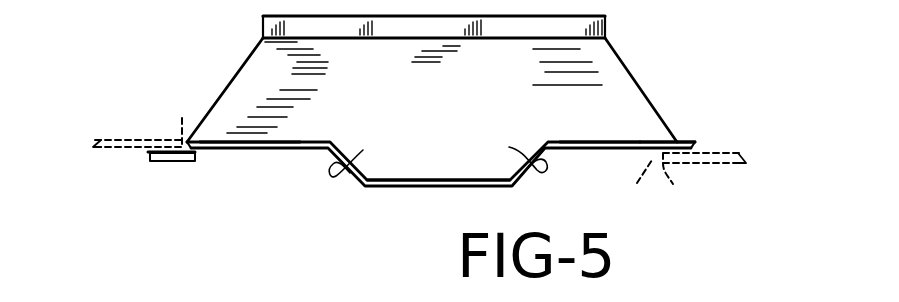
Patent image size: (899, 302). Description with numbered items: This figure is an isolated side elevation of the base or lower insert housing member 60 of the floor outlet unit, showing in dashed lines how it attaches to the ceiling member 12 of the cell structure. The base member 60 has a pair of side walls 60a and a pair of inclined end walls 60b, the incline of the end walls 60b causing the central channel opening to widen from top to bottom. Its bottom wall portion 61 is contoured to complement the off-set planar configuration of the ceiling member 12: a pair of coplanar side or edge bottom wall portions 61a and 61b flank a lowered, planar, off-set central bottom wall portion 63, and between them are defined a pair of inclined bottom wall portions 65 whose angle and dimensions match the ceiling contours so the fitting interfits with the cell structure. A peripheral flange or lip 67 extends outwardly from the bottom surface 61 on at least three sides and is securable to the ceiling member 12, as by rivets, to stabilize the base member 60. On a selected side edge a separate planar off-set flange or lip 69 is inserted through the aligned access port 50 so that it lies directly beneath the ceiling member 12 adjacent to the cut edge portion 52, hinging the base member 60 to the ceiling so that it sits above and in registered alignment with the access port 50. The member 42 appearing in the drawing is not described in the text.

The base insert housing member 60 is at (667, 108).
The side wall 60a is at (474, 103).
The inclined end wall 60b is at (255, 50).
The bottom wall portion 61 is at (276, 150).
The side bottom wall portion 61a is at (246, 150).
The side bottom wall portion 61b is at (585, 150).
The central bottom wall portion 63 is at (407, 188).
The inclined bottom wall portion 65 is at (438, 152).
The peripheral flange 67 is at (603, 143).
The off-set flange 69 is at (160, 153).
The ceiling member 12 is at (110, 140).
The frame member 42 is at (740, 165).
The access port 50 is at (634, 187).
The cut edge portion 52 is at (433, 152).